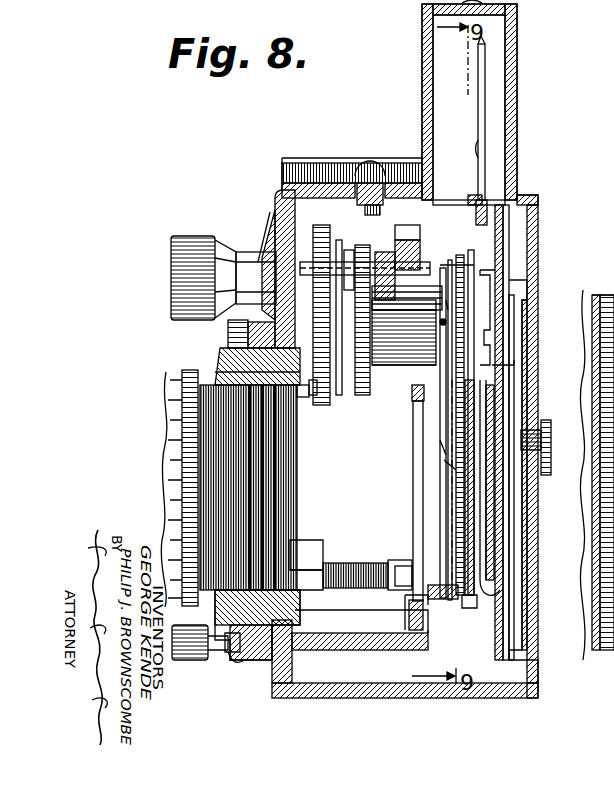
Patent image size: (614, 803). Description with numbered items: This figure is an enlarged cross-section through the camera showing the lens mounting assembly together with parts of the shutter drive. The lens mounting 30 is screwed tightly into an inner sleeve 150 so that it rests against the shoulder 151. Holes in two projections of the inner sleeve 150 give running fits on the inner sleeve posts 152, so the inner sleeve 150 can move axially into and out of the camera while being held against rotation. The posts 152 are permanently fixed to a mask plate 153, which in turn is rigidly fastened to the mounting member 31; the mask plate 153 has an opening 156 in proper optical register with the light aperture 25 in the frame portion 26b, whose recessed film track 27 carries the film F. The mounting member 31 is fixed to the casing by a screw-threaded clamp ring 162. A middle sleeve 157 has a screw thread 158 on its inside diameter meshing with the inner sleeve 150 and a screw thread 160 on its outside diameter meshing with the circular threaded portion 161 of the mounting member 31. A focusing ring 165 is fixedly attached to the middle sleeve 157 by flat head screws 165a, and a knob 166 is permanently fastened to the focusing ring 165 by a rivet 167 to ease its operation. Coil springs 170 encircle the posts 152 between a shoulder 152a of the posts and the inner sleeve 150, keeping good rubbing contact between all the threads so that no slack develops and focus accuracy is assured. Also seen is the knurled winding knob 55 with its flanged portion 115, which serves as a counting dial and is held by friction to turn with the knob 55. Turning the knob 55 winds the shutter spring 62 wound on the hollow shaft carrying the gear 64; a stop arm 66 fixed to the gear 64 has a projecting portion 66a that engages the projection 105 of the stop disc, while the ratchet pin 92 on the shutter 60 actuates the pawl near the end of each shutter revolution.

The light aperture 25 is at (500, 586).
The interconnecting longitudinal portion 26b is at (516, 358).
The film track 27 is at (516, 343).
The lens mounting 30 is at (155, 445).
The mounting member 31 is at (345, 650).
The winding knob 55 is at (180, 248).
The shutter 60 is at (486, 108).
The spring 62 is at (402, 365).
The gear 64 is at (358, 390).
The stop arm 66 is at (400, 303).
The projecting portion of stop arm 66a is at (442, 273).
The ratchet pin 92 is at (478, 195).
The projecting portion of stop disc 105 is at (535, 208).
The flanged portion 115 is at (266, 238).
The inner sleeve 150 is at (325, 553).
The shoulder 151 is at (185, 370).
The inner sleeve posts 152 is at (398, 560).
The shoulder of posts 152a is at (395, 588).
The mask plate 153 is at (418, 398).
The opening 156 is at (413, 474).
The middle sleeve 157 is at (270, 460).
The screw thread 158 is at (285, 438).
The screw thread 160 is at (305, 395).
The circular threaded portion 161 is at (268, 648).
The clamp ring 162 is at (245, 332).
The focusing ring 165 is at (210, 308).
The flat head screws 165a is at (230, 372).
The knob 166 is at (192, 660).
The rivet 167 is at (232, 660).
The coil springs 170 is at (350, 588).
The film F is at (500, 523).